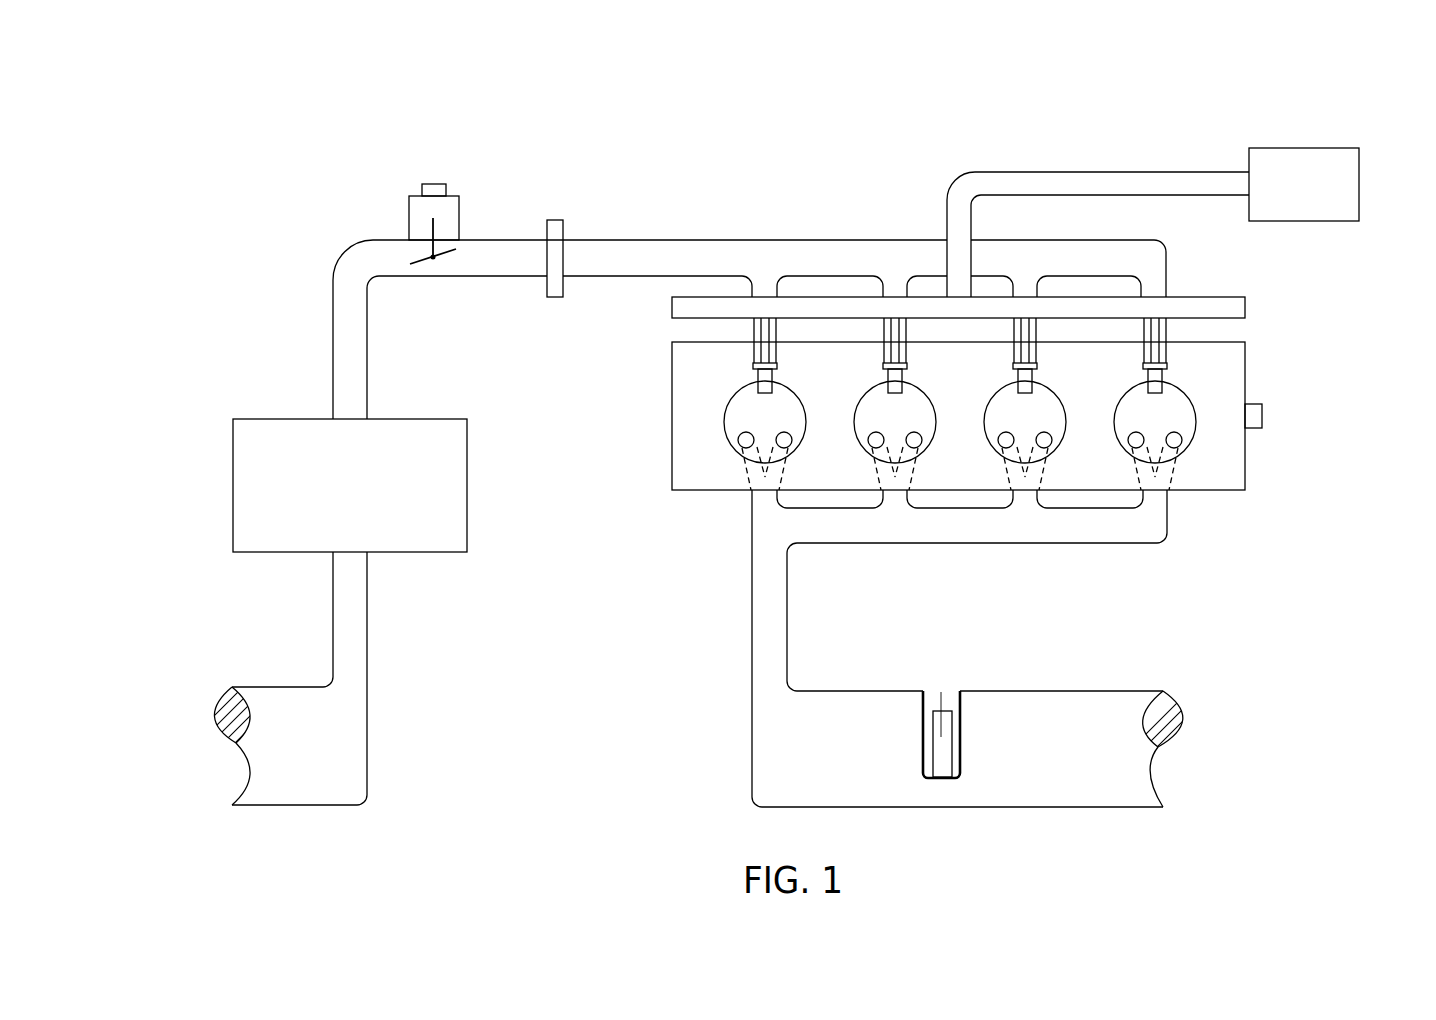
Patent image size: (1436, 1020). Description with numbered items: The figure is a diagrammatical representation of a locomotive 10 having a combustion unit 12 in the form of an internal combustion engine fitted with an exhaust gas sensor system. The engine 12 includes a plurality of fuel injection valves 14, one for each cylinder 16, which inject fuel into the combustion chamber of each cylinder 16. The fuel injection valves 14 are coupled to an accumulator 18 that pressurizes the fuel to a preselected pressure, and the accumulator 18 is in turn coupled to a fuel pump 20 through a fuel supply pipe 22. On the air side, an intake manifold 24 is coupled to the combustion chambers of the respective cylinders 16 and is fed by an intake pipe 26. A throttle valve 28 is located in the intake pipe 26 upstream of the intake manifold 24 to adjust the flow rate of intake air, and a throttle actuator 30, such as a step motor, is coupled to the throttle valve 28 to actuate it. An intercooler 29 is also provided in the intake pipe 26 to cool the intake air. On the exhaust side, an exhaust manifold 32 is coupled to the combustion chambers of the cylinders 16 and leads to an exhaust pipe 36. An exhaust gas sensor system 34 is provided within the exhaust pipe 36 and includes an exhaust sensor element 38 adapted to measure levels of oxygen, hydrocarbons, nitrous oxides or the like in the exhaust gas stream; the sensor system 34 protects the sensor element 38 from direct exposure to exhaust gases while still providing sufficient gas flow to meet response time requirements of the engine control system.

The locomotive 10 is at (190, 109).
The combustion unit 12 is at (1245, 457).
The fuel injection valves 14 is at (881, 366).
The cylinder 16 is at (733, 394).
The accumulator 18 is at (1245, 305).
The fuel pump 20 is at (1359, 185).
The fuel supply pipe 22 is at (1117, 172).
The intake manifold 24 is at (753, 240).
The intake pipe 26 is at (368, 353).
The throttle valve 28 is at (450, 256).
The intercooler 29 is at (467, 487).
The throttle actuator 30 is at (435, 183).
The exhaust manifold 32 is at (787, 617).
The exhaust gas sensor system 34 is at (951, 682).
The exhaust pipe 36 is at (1085, 810).
The exhaust sensor element 38 is at (941, 737).